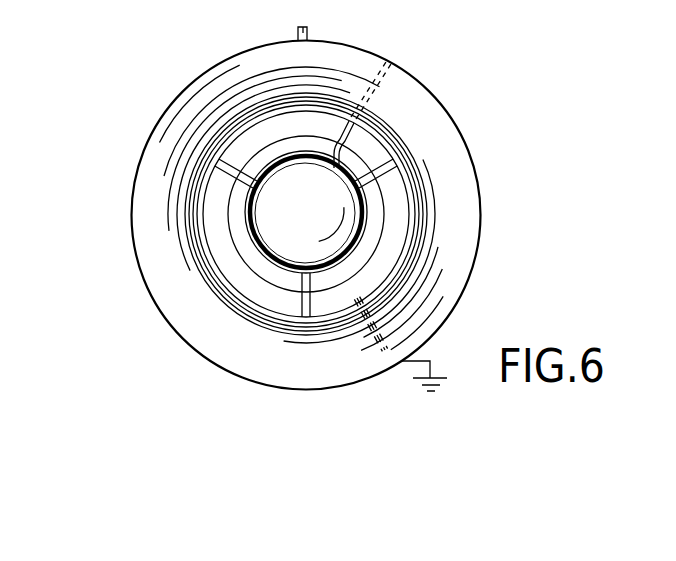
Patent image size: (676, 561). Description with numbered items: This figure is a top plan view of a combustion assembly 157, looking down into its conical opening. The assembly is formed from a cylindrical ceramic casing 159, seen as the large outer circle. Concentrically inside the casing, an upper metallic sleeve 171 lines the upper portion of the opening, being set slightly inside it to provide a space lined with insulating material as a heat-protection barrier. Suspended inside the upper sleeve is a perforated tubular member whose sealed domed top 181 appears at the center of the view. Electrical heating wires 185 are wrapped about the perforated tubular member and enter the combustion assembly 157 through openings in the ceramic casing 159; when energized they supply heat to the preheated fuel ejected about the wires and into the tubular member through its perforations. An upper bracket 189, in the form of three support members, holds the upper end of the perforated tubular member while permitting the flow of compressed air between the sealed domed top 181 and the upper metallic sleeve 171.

The combustion assembly 157 is at (580, 148).
The cylindrical ceramic casing 159 is at (142, 203).
The upper metallic sleeve 171 is at (410, 192).
The sealed domed top 181 is at (262, 226).
The electrical heating wires 185 is at (360, 240).
The upper bracket 189 is at (222, 165).